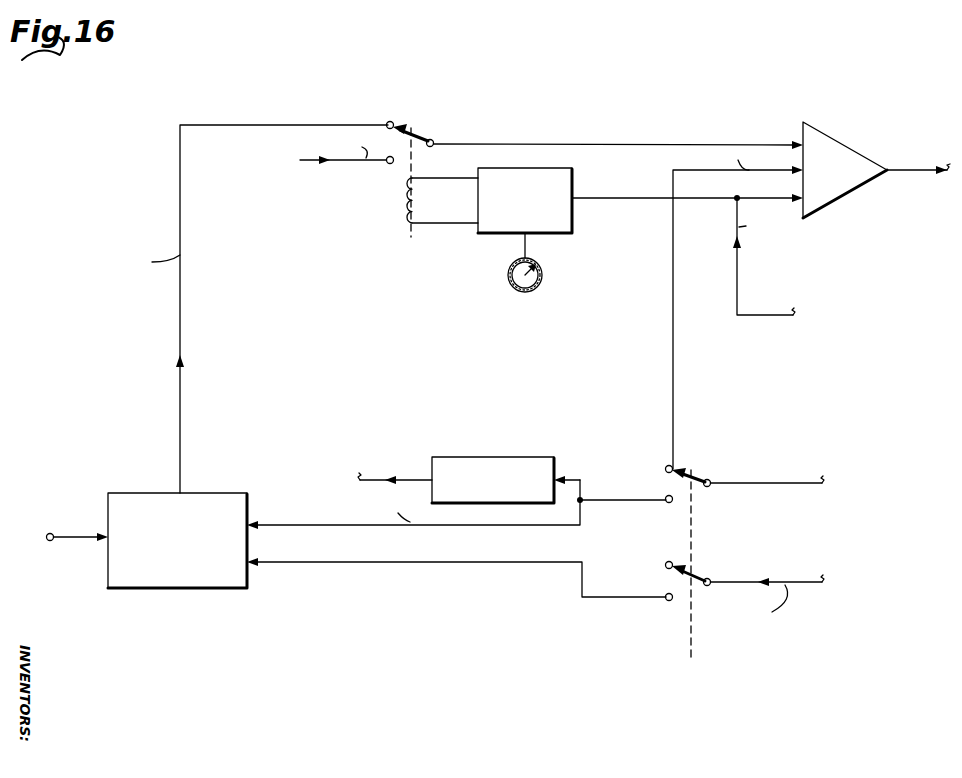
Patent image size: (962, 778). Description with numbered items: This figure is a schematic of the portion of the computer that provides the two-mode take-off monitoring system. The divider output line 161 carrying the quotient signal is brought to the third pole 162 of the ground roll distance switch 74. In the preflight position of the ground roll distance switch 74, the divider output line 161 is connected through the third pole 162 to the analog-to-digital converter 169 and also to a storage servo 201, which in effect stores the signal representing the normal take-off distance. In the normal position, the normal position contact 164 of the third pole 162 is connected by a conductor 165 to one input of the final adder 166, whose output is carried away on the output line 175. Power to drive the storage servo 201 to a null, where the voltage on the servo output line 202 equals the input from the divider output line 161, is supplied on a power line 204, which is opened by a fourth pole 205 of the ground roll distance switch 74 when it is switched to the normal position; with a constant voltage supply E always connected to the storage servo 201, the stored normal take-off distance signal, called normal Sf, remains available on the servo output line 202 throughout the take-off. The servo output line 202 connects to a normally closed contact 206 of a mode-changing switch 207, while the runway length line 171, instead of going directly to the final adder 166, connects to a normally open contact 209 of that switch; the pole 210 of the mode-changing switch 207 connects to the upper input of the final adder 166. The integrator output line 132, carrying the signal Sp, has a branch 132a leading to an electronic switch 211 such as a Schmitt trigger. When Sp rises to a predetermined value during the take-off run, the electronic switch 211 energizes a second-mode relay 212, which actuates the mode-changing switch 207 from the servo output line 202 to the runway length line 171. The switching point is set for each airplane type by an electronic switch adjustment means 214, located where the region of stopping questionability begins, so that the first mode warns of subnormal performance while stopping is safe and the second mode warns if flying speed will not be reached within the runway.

The ground roll distance switch 74 is at (692, 638).
The integrator output line 132 is at (739, 282).
The branch 132a is at (692, 200).
The divider output line 161 is at (757, 483).
The third pole 162 is at (697, 478).
The normal position contact 164 is at (668, 470).
The conductor 165 is at (673, 277).
The final adder 166 is at (833, 168).
The analog-to-digital converter 169 is at (530, 440).
The runway length line 171 is at (348, 163).
The output lead 175 is at (900, 172).
The storage servo 201 is at (210, 500).
The servo output line 202 is at (179, 425).
The power line 204 is at (398, 568).
The fourth pole 205 is at (695, 575).
The normally closed contact 206 is at (389, 122).
The mode-changing switch 207 is at (420, 134).
The normally open contact 209 is at (388, 164).
The pole 210 is at (431, 147).
The electronic switch 211 is at (560, 184).
The second-mode relay 212 is at (406, 210).
The electronic switch adjustment means 214 is at (541, 268).